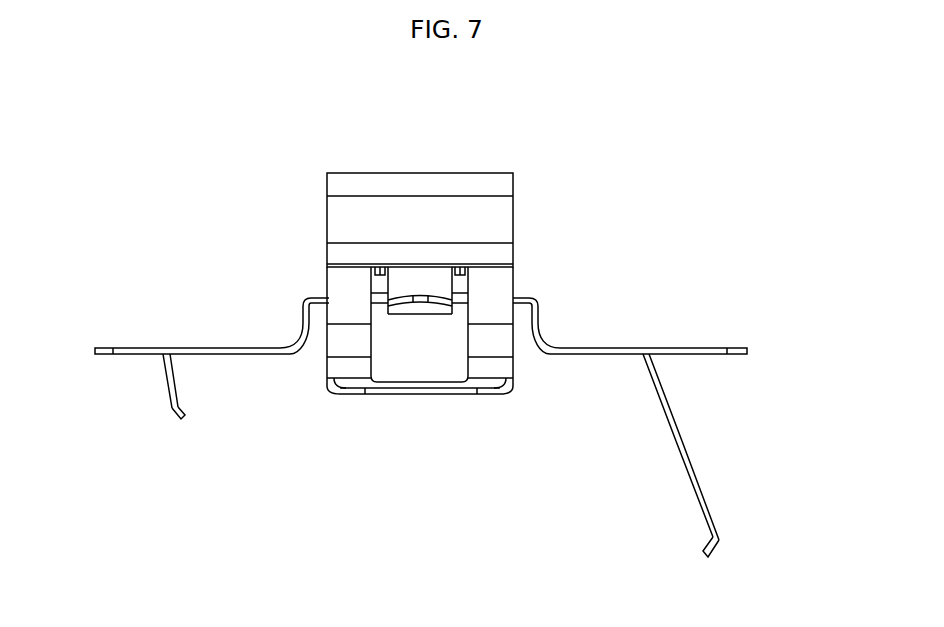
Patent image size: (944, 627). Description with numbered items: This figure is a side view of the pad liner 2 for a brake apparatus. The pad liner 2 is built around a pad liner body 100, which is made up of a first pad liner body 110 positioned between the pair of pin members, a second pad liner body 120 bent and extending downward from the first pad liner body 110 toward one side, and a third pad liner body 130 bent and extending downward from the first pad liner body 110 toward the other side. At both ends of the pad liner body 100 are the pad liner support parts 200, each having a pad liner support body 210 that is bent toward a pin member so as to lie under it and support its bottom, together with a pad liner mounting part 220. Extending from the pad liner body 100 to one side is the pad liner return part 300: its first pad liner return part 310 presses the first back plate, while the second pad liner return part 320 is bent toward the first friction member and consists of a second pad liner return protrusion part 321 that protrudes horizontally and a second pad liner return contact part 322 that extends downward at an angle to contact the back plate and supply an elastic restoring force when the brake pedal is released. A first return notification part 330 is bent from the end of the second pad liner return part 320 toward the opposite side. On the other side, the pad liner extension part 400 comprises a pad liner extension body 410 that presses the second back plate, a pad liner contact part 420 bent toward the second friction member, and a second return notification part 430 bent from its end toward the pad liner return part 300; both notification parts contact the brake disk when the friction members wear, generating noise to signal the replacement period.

The pad liner 2 is at (726, 88).
The pad liner body 100 is at (527, 482).
The first pad liner body 110 is at (310, 335).
The second pad liner body 120 is at (536, 353).
The third pad liner body 130 is at (297, 350).
The pad liner support part 200 is at (617, 203).
The pad liner support body 210 is at (490, 285).
The pad liner mounting part 220 is at (432, 285).
The pad liner return part 300 is at (765, 268).
The first pad liner return part 310 is at (685, 350).
The second pad liner return part 320 is at (748, 383).
The second pad liner return protrusion part 321 is at (647, 357).
The second pad liner return contact part 322 is at (698, 477).
The first return notification part 330 is at (712, 553).
The pad liner extension part 400 is at (140, 498).
The pad liner extension body 410 is at (203, 350).
The pad liner contact part 420 is at (163, 393).
The second return notification part 430 is at (168, 423).